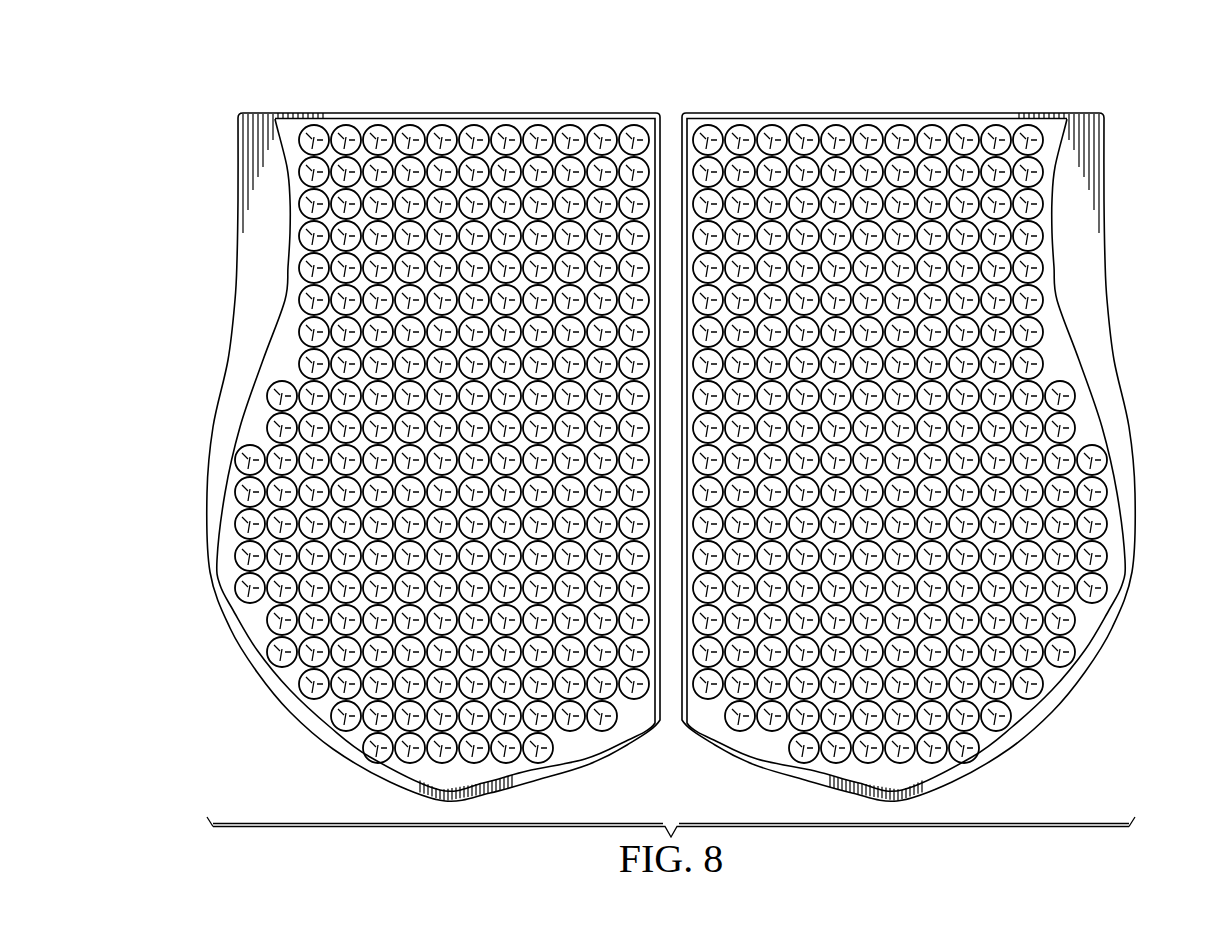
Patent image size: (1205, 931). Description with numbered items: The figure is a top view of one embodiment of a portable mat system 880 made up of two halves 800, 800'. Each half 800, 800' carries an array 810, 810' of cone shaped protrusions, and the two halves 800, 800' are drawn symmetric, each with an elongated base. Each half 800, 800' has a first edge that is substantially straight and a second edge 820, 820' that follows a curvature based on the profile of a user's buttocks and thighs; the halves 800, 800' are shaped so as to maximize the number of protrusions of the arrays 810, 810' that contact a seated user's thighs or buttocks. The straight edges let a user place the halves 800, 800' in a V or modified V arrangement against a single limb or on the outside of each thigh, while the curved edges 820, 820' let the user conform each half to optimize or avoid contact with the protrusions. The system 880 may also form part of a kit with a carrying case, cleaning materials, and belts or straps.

The system 880 is at (127, 144).
The half 800 is at (414, 419).
The half 800' is at (931, 419).
The array 810 is at (409, 444).
The array 810' is at (936, 444).
The perimeter rim 820 is at (414, 457).
The perimeter rim 820' is at (931, 457).